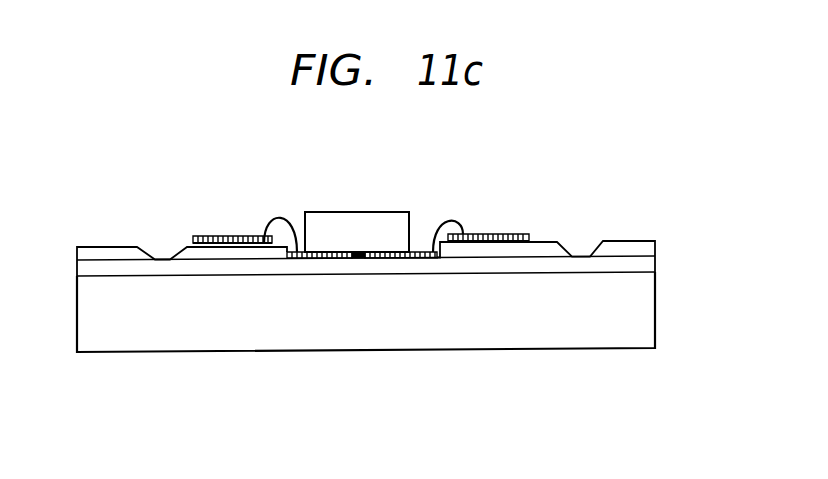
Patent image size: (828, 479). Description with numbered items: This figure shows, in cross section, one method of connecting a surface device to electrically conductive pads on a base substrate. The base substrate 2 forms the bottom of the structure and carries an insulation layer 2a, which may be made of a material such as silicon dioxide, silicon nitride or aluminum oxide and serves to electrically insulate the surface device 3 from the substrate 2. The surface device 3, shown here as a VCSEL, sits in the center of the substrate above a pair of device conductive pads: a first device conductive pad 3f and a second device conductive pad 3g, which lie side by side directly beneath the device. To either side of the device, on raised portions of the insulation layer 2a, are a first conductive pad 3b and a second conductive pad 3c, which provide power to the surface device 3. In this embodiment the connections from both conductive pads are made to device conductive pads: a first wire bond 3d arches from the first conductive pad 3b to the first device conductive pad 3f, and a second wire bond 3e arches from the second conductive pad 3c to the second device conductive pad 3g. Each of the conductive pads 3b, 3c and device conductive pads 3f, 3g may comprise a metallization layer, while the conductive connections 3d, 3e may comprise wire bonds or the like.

The base substrate 2 is at (663, 316).
The insulation layer 2a is at (663, 263).
The surface device 3 is at (377, 211).
The first conductive pad 3b is at (207, 236).
The second conductive pad 3c is at (518, 233).
The first wire bond 3d is at (268, 236).
The second wire bond 3e is at (451, 222).
The first device conductive pad 3f is at (308, 258).
The second device conductive pad 3g is at (408, 258).